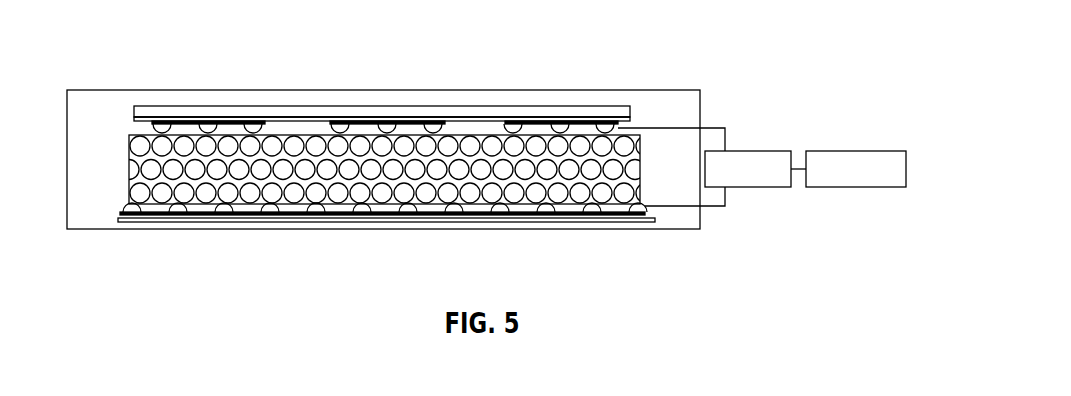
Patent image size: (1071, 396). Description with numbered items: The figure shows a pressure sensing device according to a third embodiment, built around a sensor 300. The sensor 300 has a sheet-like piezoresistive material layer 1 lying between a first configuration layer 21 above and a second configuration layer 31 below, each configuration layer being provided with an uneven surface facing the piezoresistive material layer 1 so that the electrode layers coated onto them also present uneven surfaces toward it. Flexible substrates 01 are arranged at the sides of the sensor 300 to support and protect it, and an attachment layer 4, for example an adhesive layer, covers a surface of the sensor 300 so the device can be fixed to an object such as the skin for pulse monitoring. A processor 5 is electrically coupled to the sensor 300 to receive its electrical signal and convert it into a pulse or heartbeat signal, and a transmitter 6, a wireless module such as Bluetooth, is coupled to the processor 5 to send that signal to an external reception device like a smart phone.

The sensor 300 is at (800, 25).
The attachment layer 4 is at (297, 98).
The flexible substrate 01 is at (473, 112).
The first configuration layer 21 is at (618, 115).
The piezoresistive material layer 1 is at (627, 168).
The second configuration layer 31 is at (650, 219).
The processor 5 is at (779, 151).
The transmitter 6 is at (870, 151).